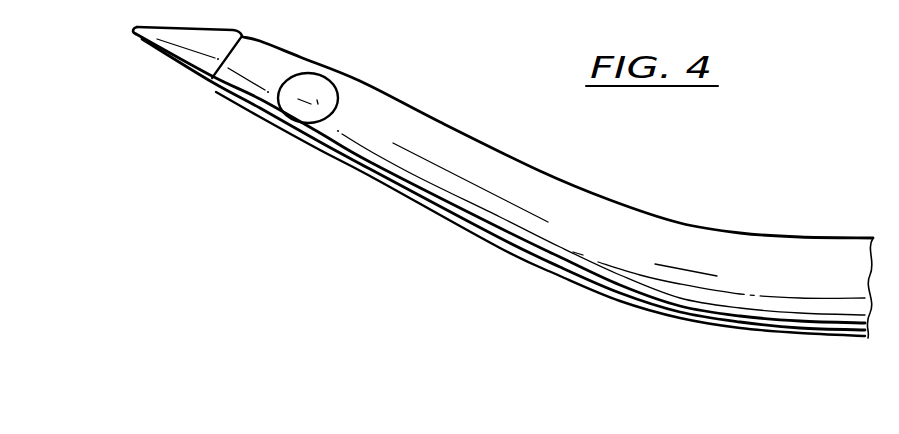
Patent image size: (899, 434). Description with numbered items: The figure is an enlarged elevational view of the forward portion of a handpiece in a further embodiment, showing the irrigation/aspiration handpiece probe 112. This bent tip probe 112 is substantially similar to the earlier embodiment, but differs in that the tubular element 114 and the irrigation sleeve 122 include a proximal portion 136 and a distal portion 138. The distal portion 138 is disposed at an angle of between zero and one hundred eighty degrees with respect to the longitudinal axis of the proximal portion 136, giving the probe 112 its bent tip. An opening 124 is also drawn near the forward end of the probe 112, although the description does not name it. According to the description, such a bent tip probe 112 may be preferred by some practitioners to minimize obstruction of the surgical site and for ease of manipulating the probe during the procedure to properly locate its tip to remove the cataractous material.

The irrigation/aspiration handpiece probe 112 is at (508, 303).
The tubular element 114 is at (171, 71).
The irrigation sleeve 122 is at (448, 221).
The aperture 124 is at (300, 104).
The proximal portion 136 is at (858, 222).
The distal portion 138 is at (428, 88).